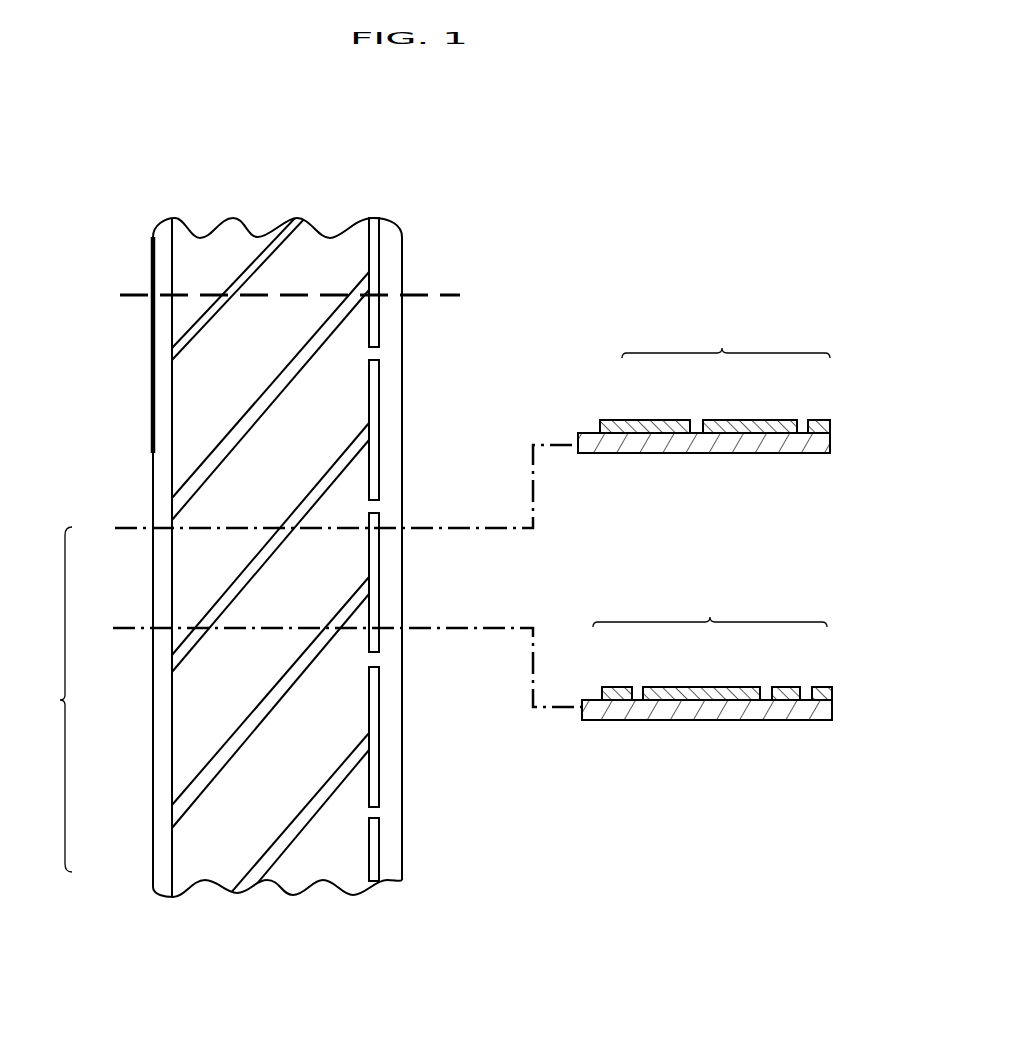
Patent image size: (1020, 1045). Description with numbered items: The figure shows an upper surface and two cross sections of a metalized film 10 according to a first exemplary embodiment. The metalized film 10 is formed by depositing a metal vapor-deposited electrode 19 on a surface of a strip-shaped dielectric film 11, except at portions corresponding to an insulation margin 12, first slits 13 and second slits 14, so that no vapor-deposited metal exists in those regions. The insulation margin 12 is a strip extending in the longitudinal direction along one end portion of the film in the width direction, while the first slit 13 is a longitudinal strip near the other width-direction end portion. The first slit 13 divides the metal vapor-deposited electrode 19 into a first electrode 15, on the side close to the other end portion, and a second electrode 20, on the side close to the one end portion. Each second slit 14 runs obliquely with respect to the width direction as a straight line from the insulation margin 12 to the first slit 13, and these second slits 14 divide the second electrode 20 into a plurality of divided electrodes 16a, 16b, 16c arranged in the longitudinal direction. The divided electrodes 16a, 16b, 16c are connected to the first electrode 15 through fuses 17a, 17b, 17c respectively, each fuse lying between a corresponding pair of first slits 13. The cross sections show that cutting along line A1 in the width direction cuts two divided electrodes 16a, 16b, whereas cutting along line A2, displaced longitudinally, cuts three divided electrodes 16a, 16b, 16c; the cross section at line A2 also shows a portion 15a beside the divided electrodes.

The metalized film 10 is at (175, 192).
The dielectric film 11 is at (597, 446).
The insulation margin 12 is at (167, 271).
The first slit 13 is at (378, 388).
The second slit 14 is at (270, 600).
The first electrode 15 is at (392, 265).
The edge electrode portion 15a is at (825, 687).
The divided electrode 16a is at (230, 560).
The divided electrode 16b is at (220, 712).
The divided electrode 16c is at (250, 803).
The fuse 17a is at (374, 353).
The fuse 17b is at (375, 506).
The fuse 17c is at (375, 656).
The metal vapor-deposited electrode 19 is at (711, 477).
The second electrode 20 is at (54, 699).